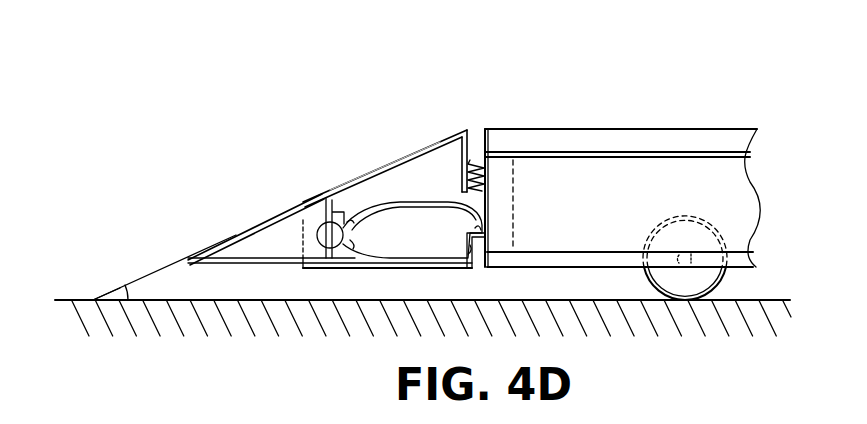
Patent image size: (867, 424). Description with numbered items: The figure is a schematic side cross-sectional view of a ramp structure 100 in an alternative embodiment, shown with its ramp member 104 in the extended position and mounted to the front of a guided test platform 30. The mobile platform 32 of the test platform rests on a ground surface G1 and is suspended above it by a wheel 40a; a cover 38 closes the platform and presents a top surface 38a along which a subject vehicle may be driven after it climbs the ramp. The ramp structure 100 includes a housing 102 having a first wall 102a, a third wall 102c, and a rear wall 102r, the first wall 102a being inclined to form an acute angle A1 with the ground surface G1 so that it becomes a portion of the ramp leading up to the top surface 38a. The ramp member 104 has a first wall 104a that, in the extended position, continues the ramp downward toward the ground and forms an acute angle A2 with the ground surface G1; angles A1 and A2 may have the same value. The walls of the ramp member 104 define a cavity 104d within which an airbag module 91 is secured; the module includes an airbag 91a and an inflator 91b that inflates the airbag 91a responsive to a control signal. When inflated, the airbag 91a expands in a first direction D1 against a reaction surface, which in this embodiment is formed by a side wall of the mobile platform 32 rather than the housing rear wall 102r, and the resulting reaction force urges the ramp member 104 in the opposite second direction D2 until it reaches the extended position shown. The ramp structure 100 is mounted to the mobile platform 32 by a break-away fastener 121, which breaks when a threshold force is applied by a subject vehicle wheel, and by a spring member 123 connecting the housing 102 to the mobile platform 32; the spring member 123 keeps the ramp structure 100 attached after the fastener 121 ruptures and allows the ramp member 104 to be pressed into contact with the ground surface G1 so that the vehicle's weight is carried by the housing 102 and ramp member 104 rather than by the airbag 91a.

The guided test platform 30 is at (203, 115).
The mobile platform 32 is at (593, 178).
The cover 38 is at (712, 138).
The top surface 38a is at (678, 128).
The wheel 40a is at (720, 283).
The ramp structure 100 is at (370, 144).
The housing 102 is at (395, 160).
The first wall 102a is at (360, 175).
The rear wall 102r is at (470, 129).
The third wall 102c is at (453, 186).
The spring member 123 is at (480, 162).
The break-away fastener 121 is at (476, 244).
The ramp member 104 is at (263, 220).
The first wall 104a is at (248, 231).
The cavity 104d is at (192, 252).
The airbag module 91 is at (328, 250).
The airbag 91a is at (417, 242).
The inflator 91b is at (317, 238).
The ground surface G1 is at (62, 299).
The first direction D1 is at (302, 145).
The second direction D2 is at (230, 230).
The acute angle A1 is at (129, 296).
The acute angle A2 is at (113, 302).